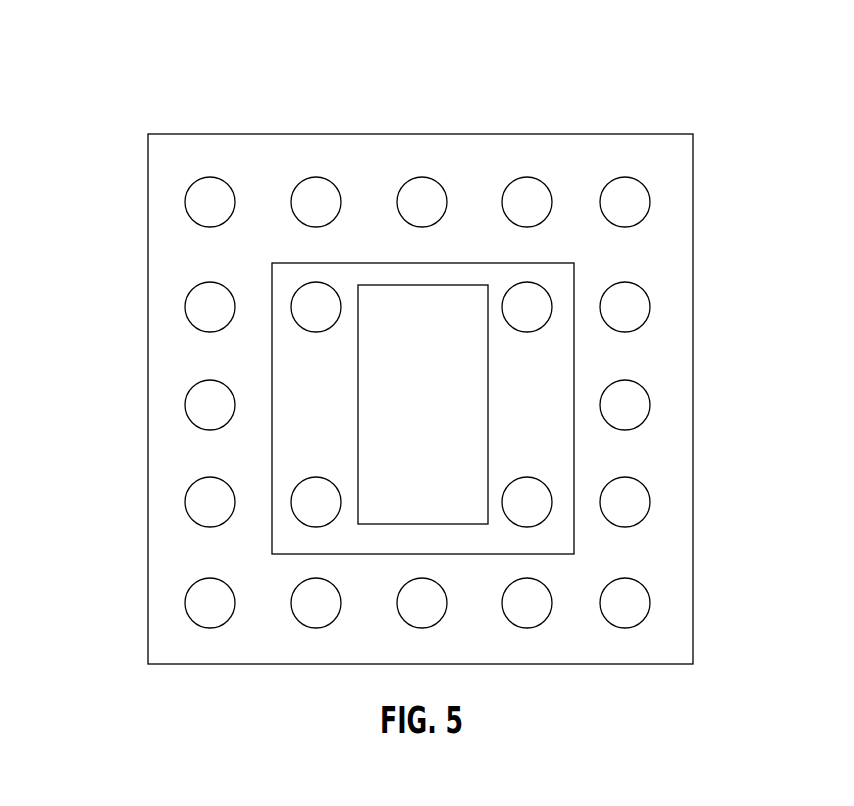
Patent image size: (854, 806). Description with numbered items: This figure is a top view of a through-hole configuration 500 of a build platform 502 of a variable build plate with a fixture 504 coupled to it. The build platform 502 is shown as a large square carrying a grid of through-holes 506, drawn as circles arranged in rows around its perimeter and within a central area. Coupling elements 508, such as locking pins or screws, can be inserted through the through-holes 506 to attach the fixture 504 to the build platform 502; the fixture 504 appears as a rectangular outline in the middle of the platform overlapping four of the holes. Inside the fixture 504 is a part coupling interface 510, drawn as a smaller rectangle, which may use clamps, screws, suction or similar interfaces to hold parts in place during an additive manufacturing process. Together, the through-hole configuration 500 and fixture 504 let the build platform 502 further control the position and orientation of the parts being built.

The through-hole configuration 500 is at (135, 45).
The build platform 502 is at (297, 133).
The fixture 504 is at (556, 527).
The through-holes 506 is at (185, 203).
The coupling elements 508 is at (550, 297).
The part coupling interface 510 is at (446, 423).